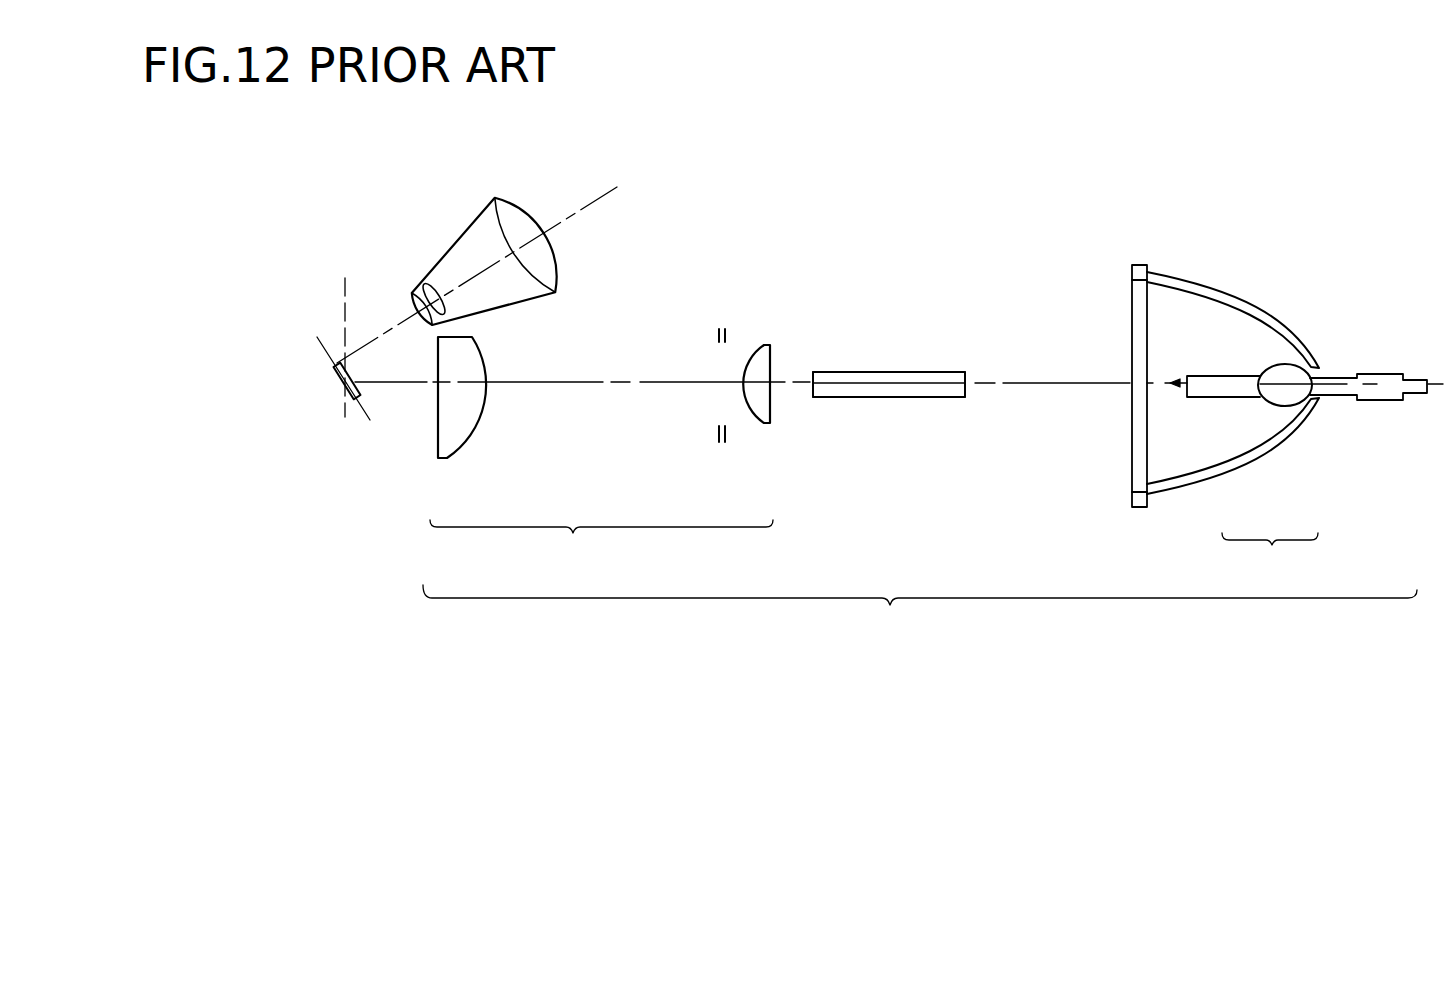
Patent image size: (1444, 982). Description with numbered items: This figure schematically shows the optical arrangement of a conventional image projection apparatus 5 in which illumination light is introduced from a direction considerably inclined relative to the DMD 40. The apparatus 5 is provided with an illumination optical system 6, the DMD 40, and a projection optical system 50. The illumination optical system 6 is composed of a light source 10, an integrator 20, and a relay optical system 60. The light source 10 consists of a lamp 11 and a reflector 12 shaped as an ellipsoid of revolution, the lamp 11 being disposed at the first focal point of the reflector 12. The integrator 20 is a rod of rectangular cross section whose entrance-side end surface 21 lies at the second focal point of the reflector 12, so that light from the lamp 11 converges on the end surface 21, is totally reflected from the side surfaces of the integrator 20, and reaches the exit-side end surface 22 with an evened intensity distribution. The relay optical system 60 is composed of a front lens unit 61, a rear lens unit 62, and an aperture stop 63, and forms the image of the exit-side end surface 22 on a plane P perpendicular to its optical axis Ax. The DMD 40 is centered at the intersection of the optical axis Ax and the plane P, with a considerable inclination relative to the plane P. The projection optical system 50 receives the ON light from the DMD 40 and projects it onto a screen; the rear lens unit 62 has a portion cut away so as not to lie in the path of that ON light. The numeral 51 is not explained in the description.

The image projection apparatus 5 is at (769, 737).
The illumination optical system 6 is at (852, 411).
The light source 10 is at (1279, 424).
The lamp 11 is at (1293, 397).
The reflector 12 is at (1237, 477).
The integrator 20 is at (887, 400).
The entrance-side end surface 21 is at (970, 371).
The exit-side end surface 22 is at (810, 371).
The DMD 40 is at (333, 378).
The projection optical system 50 is at (465, 250).
The aperture of second light source 51 is at (427, 281).
The relay optical system 60 is at (602, 450).
The front lens unit 61 is at (753, 411).
The rear lens unit 62 is at (460, 423).
The aperture stop 63 is at (717, 437).
The optical axis Ax is at (570, 382).
The plane P is at (342, 302).